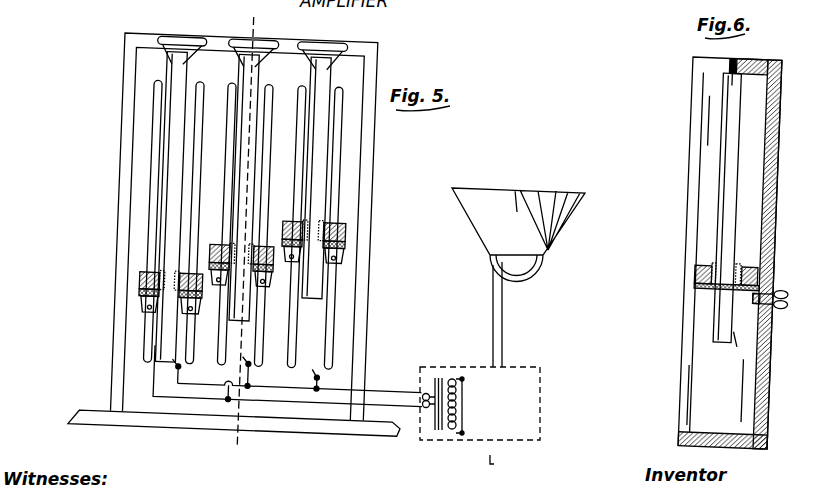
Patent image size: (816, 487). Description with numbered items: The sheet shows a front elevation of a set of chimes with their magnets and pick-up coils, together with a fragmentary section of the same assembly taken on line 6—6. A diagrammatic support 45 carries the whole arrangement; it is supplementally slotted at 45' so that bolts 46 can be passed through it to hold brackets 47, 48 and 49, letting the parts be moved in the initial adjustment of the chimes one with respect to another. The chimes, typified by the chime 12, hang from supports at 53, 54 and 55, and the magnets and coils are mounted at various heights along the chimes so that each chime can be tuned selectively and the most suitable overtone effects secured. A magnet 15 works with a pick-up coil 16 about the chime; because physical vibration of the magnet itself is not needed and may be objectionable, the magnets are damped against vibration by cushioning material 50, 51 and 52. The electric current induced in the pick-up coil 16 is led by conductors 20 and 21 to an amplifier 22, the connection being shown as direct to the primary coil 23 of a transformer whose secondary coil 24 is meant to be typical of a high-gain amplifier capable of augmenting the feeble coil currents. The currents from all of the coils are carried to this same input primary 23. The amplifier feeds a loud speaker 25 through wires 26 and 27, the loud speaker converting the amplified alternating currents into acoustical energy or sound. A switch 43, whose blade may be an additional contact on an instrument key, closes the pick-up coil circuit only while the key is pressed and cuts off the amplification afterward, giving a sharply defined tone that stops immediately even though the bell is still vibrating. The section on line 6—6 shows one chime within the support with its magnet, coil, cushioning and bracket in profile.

In FIG. 5, the support 45 is at (244, 210).
In FIG. 6, the support 45 is at (716, 252).
In FIG. 5, the slot 45' is at (246, 224).
In FIG. 5, the chime 12 is at (172, 222).
In FIG. 5, the chime support 53 is at (178, 38).
In FIG. 5, the chime support 54 is at (270, 43).
In FIG. 6, the chime support 54 is at (733, 62).
In FIG. 5, the chime support 55 is at (331, 47).
In FIG. 5, the magnet 15 is at (140, 285).
In FIG. 5, the pick-up coil 16 is at (157, 270).
In FIG. 5, the cushioning material 50 is at (140, 296).
In FIG. 5, the cushioning material 51 is at (212, 263).
In FIG. 6, the cushioning material 51 is at (700, 288).
In FIG. 5, the bracket 49 is at (348, 240).
In FIG. 5, the cushioning material 52 is at (352, 230).
In FIG. 5, the bolt 46 is at (147, 304).
In FIG. 6, the bolt 46 is at (752, 326).
In FIG. 5, the bracket 47 is at (148, 308).
In FIG. 5, the switch 43 is at (182, 369).
In FIG. 5, the bracket 48 is at (252, 366).
In FIG. 6, the bracket 48 is at (703, 289).
In FIG. 5, the conductor 20 is at (373, 388).
In FIG. 5, the conductor 21 is at (406, 412).
In FIG. 5, the amplifier 22 is at (527, 386).
In FIG. 5, the primary coil 23 is at (422, 396).
In FIG. 5, the secondary coil 24 is at (448, 433).
In FIG. 5, the loud speaker 25 is at (543, 200).
In FIG. 5, the wire 26 is at (503, 327).
In FIG. 5, the wire 27 is at (492, 320).
In FIG. 5, the section line 6 is at (252, 13).